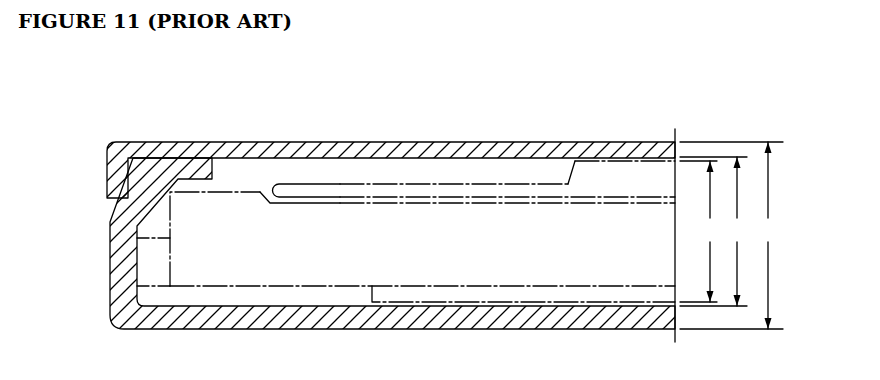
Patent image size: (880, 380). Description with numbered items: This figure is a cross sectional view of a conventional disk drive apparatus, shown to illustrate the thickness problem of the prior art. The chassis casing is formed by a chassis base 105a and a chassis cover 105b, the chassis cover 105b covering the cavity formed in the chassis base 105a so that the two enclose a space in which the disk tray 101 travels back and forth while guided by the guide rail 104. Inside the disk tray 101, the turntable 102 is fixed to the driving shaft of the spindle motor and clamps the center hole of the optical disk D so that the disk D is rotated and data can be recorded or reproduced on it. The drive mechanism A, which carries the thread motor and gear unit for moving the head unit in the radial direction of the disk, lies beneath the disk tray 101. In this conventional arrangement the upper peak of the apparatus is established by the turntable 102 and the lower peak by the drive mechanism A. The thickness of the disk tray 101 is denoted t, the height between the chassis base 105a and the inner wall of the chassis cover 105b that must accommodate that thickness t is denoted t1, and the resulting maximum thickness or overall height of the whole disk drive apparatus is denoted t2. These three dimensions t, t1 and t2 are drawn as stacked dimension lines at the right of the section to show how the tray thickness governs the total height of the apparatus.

The disk tray 101 is at (300, 272).
The turntable 102 is at (568, 173).
The guide rail 104 is at (162, 264).
The chassis base 105a is at (424, 328).
The chassis cover 105b is at (425, 142).
The optical disk D is at (309, 184).
The drive mechanism A is at (511, 290).
The thickness of the disk tray t is at (709, 231).
The height between chassis base and inner wall of chassis cover t1 is at (736, 231).
The overall height of the disk drive apparatus t2 is at (767, 235).